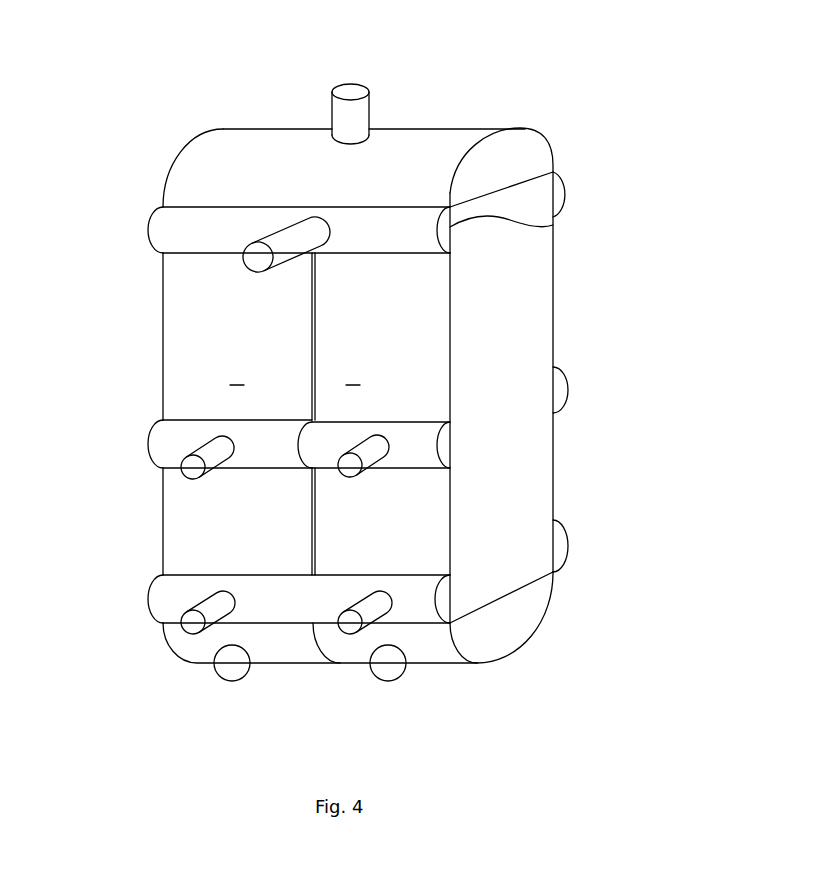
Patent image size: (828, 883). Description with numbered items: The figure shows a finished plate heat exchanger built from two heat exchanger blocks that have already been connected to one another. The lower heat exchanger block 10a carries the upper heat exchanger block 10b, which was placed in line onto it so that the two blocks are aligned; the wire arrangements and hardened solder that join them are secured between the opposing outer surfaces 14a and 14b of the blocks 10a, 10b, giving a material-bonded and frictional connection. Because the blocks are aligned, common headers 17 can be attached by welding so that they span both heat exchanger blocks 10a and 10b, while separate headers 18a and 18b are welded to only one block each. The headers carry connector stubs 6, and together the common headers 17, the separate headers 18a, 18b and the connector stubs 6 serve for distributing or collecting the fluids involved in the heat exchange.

The connector stub 6 is at (348, 88).
The lower heat exchanger block 10a is at (190, 338).
The upper heat exchanger block 10b is at (420, 337).
The outer surface 14a is at (312, 293).
The outer surface 14b is at (323, 297).
The common header 17 is at (537, 150).
The separate header 18a is at (155, 447).
The separate header 18b is at (450, 450).